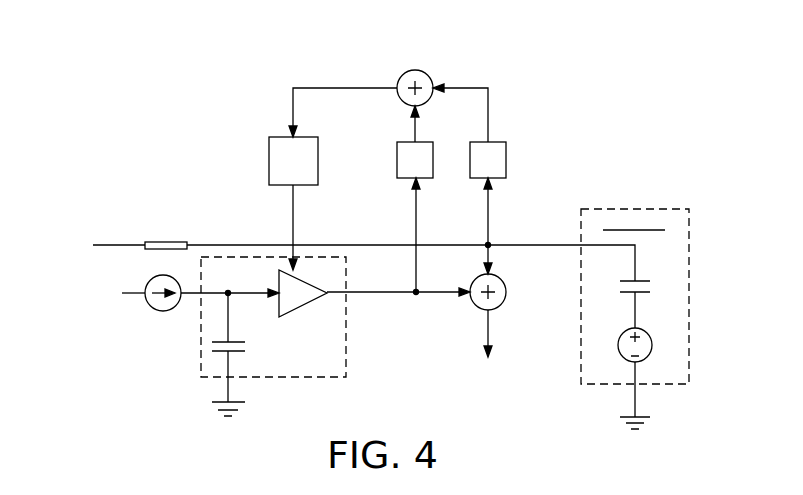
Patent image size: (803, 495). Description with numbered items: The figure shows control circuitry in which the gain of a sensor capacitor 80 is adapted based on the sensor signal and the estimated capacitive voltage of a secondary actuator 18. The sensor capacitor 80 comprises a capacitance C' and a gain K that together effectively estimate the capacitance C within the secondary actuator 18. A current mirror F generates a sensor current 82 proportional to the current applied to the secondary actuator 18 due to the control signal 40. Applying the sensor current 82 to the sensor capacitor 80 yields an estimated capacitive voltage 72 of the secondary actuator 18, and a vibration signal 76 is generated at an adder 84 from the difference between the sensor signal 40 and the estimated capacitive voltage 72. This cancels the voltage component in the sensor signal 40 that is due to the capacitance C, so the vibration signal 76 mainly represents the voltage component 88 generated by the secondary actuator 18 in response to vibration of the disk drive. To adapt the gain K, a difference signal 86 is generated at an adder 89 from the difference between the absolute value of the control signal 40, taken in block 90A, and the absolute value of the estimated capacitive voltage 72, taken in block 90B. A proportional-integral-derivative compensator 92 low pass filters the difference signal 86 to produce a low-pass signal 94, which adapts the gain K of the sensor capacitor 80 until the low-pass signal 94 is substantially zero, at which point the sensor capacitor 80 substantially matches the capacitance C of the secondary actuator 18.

The control signal 40 is at (108, 242).
The secondary actuator 18 is at (670, 384).
The voltage component 88 is at (652, 338).
The adder 89 is at (416, 69).
The difference signal 86 is at (349, 86).
The proportional-integral-derivative (PID) compensator 92 is at (268, 162).
The low-pass signal 94 is at (292, 210).
The absolute value block 90B is at (396, 157).
The absolute value block 90A is at (508, 158).
The sensor current 82 is at (165, 312).
The sensor capacitor 80 is at (312, 378).
The estimated capacitive voltage 72 is at (392, 296).
The adder 84 is at (507, 292).
The vibration signal 76 is at (488, 325).